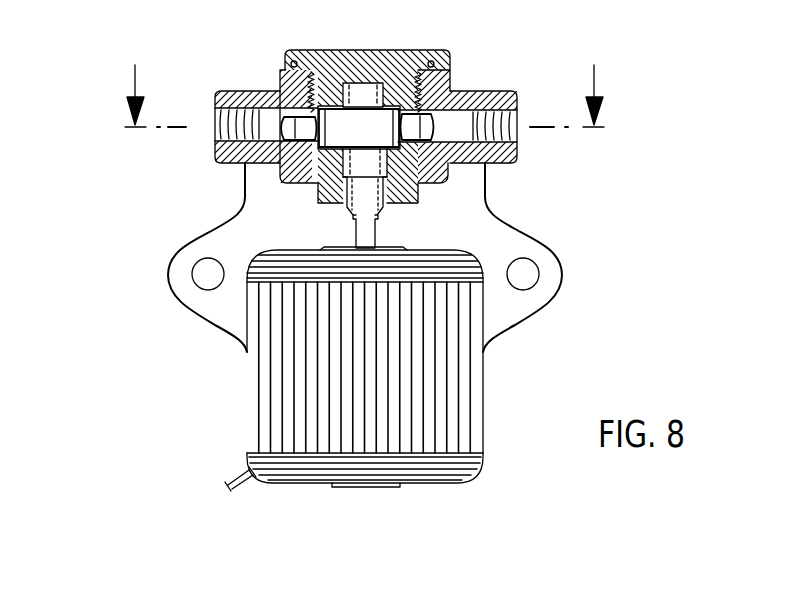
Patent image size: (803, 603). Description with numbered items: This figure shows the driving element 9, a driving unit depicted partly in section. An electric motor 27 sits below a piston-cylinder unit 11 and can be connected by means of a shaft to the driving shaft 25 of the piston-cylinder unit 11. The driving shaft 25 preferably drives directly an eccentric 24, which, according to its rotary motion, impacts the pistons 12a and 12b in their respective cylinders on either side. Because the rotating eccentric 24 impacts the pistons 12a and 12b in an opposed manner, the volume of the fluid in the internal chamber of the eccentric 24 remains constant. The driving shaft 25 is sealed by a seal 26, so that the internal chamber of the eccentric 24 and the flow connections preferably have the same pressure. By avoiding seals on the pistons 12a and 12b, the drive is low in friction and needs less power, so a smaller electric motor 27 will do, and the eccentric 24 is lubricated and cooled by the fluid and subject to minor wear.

The driving element 9 is at (547, 339).
The piston-cylinder unit 11 is at (480, 88).
The piston 12a is at (292, 125).
The piston 12b is at (423, 121).
The eccentric 24 is at (363, 120).
The driving shaft 25 is at (383, 212).
The seal 26 is at (318, 193).
The electric motor 27 is at (465, 404).